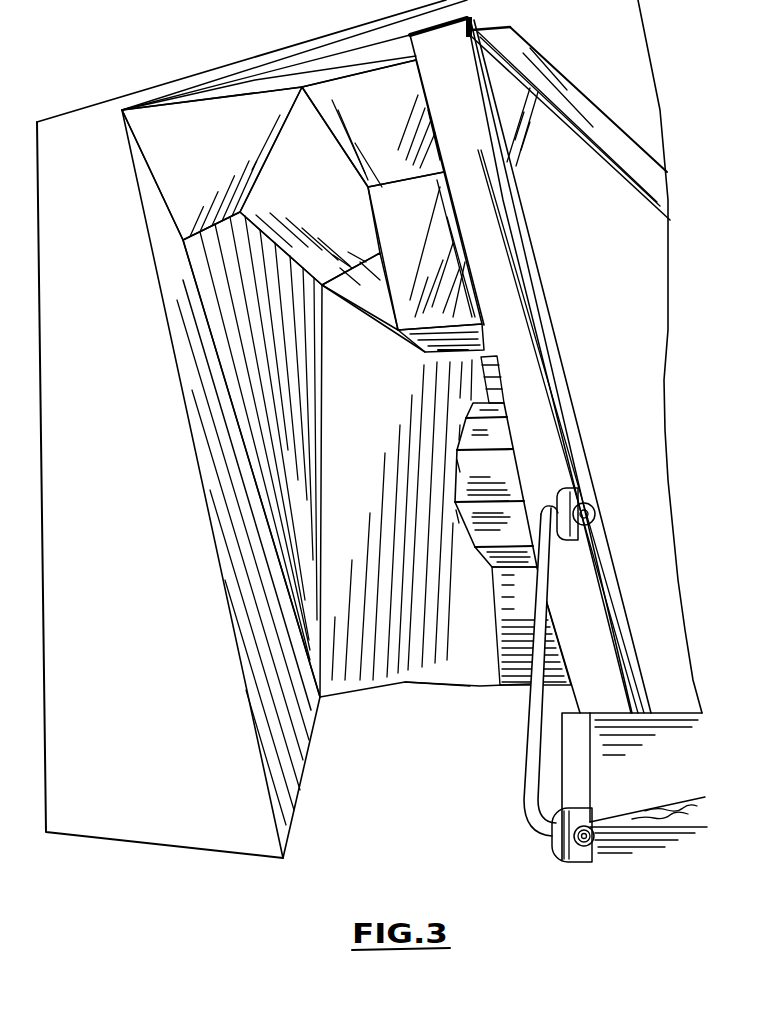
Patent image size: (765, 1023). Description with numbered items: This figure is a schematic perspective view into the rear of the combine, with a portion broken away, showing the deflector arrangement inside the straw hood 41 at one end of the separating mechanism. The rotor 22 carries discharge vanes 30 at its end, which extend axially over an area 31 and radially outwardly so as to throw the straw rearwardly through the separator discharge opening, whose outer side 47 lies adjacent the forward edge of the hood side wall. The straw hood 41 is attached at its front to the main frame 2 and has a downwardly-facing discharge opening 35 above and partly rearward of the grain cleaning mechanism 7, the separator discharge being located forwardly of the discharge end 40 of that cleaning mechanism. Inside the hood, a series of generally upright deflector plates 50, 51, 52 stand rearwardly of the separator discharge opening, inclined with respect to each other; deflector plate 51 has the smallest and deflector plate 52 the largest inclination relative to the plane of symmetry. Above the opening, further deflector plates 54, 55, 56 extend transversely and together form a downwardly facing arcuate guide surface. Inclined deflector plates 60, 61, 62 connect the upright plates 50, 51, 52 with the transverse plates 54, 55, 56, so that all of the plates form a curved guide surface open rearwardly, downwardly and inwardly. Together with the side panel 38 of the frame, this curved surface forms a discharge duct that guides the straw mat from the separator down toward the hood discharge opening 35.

The main frame 2 is at (577, 697).
The grain cleaning mechanism 7 is at (615, 869).
The rotor 22 is at (523, 407).
The discharge vanes 30 is at (492, 400).
The axial extent of the vanes 31 is at (527, 492).
The discharge opening of the straw hood 35 is at (427, 808).
The side panels 38 is at (542, 336).
The discharge end of the cleaning means 40 is at (672, 869).
The straw hood 41 is at (185, 858).
The outer sides of the discharge openings 47 is at (467, 543).
The deflector plate 50 is at (378, 402).
The deflector plate 51 is at (238, 307).
The deflector plate 52 is at (187, 289).
The deflector plate 54 is at (412, 237).
The deflector plate 55 is at (380, 114).
The deflector plate 56 is at (269, 85).
The deflector plate 60 is at (372, 296).
The deflector plate 61 is at (318, 191).
The deflector plate 62 is at (207, 159).